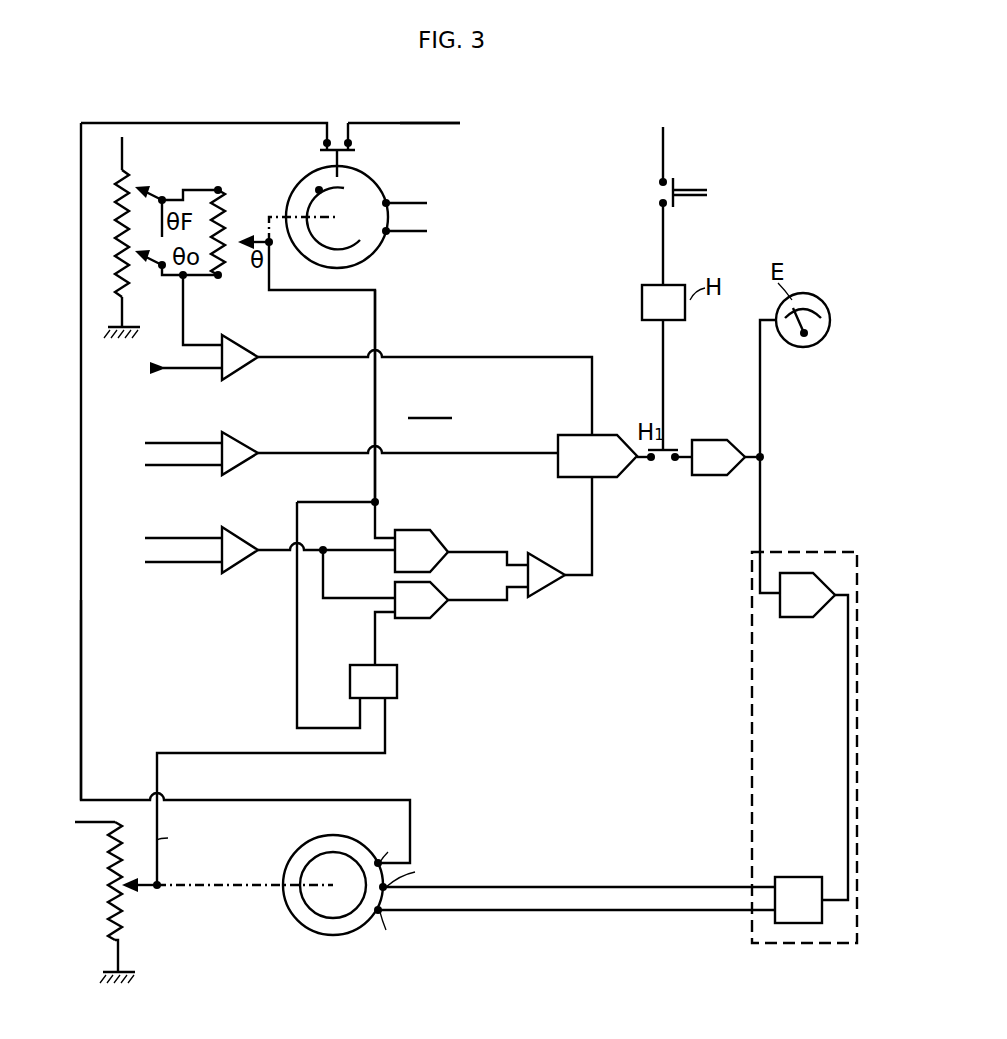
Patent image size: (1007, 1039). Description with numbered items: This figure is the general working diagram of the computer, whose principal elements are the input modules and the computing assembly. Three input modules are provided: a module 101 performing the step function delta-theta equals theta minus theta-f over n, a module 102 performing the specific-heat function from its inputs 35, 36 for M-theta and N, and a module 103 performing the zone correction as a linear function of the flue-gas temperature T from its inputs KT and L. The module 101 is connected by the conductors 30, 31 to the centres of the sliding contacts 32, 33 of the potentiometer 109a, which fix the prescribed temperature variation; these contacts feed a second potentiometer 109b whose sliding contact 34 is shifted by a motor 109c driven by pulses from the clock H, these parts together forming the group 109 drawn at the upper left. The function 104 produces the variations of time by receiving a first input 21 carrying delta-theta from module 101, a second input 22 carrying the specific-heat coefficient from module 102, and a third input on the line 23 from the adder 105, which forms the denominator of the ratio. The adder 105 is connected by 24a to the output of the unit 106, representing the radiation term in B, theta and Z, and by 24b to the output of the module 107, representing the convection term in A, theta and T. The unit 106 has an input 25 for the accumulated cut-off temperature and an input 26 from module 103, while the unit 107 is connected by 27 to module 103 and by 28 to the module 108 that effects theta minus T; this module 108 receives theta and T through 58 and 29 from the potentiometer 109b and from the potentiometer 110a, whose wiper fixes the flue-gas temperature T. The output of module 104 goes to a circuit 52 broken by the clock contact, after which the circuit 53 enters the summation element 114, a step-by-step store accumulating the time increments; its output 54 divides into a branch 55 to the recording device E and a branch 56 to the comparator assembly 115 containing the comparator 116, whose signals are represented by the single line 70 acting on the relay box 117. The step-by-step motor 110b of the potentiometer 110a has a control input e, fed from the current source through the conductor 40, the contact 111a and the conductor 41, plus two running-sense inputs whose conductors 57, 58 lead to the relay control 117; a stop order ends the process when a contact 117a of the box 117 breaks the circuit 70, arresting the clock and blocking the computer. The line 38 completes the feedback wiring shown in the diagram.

The first input 21 is at (525, 358).
The second input 22 is at (488, 455).
The third input line 23 is at (590, 535).
The adder input connection 24a is at (485, 552).
The adder input connection 24b is at (470, 600).
The input of unit 106 25 is at (372, 420).
The input of unit 106 26 is at (378, 555).
The input of unit 107 27 is at (343, 598).
The input of unit 107 28 is at (375, 650).
The conductor 29 is at (235, 752).
The conductor 30 is at (203, 345).
The conductor 31 is at (188, 369).
The sliding contact 32 is at (183, 190).
The sliding contact 33 is at (160, 268).
The sliding contact 34 is at (266, 236).
The input 35 is at (170, 443).
The input 36 is at (170, 466).
The feedback line 38 is at (295, 670).
The conductor 40 is at (437, 123).
The conductor 41 is at (82, 700).
The circuit 52 is at (648, 463).
The circuit 53 is at (678, 463).
The output 54 is at (748, 457).
The branch 55 is at (762, 398).
The branch 56 is at (762, 498).
The running-sense conductor 57 is at (530, 887).
The running-sense conductor 58 is at (595, 910).
The command line 70 is at (663, 248).
The input module 101 is at (238, 345).
The input module 102 is at (235, 445).
The input module 103 is at (238, 547).
The function module 104 is at (580, 457).
The adder 105 is at (553, 583).
The computing unit 106 is at (425, 548).
The computing unit 107 is at (418, 600).
The subtraction module 108 is at (385, 683).
The position transmitter 109 is at (375, 223).
The potentiometer 109a is at (127, 182).
The potentiometer 109b is at (227, 203).
The motor 109c is at (350, 200).
The potentiometer 110a is at (130, 895).
The step-by-step motor 110b is at (325, 900).
The contact 111a is at (336, 140).
The summation element 114 is at (707, 448).
The comparator assembly 115 is at (772, 722).
The comparator 116 is at (800, 612).
The relay box 117 is at (797, 895).
The contact 117a is at (677, 185).